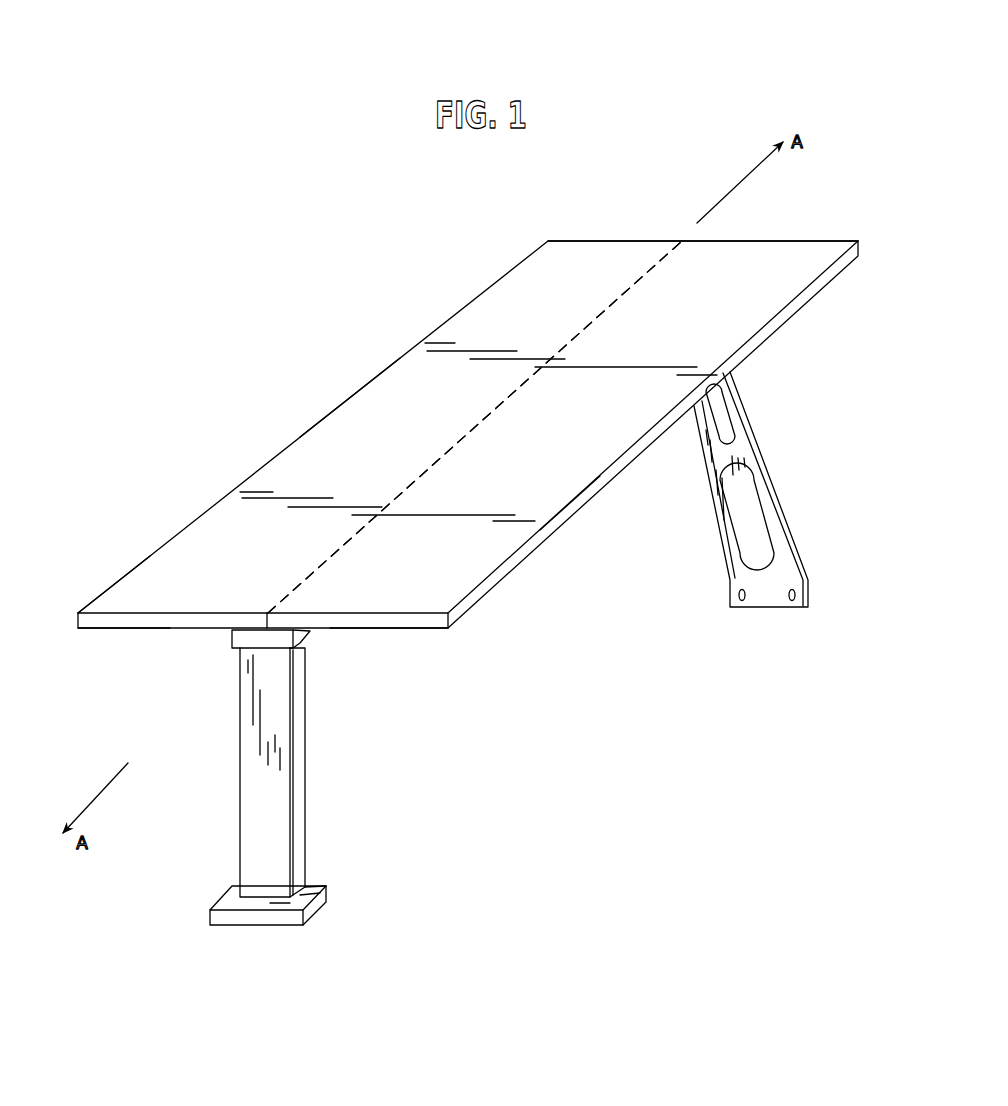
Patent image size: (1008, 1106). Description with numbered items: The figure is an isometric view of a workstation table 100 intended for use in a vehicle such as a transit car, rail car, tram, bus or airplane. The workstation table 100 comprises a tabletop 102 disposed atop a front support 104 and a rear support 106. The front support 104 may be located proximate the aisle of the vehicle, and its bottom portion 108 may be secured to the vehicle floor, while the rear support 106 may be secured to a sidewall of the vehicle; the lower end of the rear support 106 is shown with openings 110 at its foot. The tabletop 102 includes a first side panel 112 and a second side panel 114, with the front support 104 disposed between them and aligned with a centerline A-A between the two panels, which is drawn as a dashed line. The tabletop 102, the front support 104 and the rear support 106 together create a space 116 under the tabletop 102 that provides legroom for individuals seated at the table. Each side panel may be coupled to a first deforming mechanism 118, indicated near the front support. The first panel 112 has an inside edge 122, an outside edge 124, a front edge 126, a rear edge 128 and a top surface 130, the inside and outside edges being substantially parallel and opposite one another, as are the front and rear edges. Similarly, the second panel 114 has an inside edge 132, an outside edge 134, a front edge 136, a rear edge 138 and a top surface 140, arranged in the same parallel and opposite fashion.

The workstation table 100 is at (647, 127).
The tabletop 102 is at (275, 458).
The front support 104 is at (300, 783).
The rear support 106 is at (793, 528).
The bottom portion 108 is at (233, 897).
The fastener holes 110 is at (793, 597).
The first side panel 112 is at (193, 547).
The second side panel 114 is at (452, 585).
The space 116 is at (652, 633).
The first deforming mechanism 118 is at (223, 668).
The inside edge 122 is at (567, 343).
The outside edge 124 is at (149, 557).
The front edge 126 is at (110, 622).
The rear edge 128 is at (592, 241).
The top surface 130 is at (349, 420).
The inside edge 132 is at (498, 407).
The outside edge 134 is at (577, 507).
The front edge 136 is at (383, 623).
The rear edge 138 is at (758, 241).
The top surface 140 is at (735, 318).